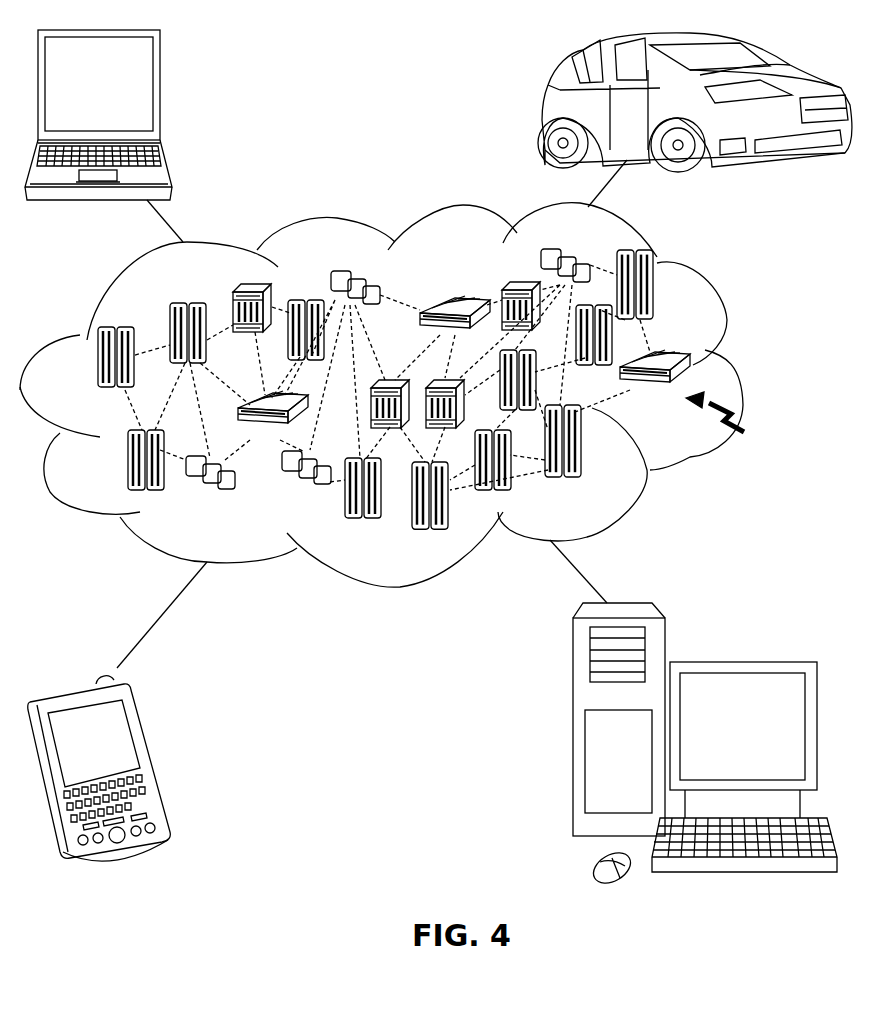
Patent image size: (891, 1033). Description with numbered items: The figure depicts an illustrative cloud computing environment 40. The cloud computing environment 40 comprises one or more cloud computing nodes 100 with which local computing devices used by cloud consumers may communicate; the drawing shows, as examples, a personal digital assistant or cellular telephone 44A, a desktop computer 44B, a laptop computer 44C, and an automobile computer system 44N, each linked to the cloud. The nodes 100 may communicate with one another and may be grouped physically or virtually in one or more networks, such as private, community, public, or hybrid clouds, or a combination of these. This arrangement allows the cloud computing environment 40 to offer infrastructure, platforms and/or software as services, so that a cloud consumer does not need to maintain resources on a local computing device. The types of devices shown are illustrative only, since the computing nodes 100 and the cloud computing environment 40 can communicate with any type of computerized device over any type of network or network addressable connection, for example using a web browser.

The cloud computing environment 40 is at (742, 366).
The personal digital assistant or cellular telephone 44A is at (152, 757).
The desktop computer 44B is at (740, 660).
The laptop computer 44C is at (160, 93).
The automobile computer system 44N is at (547, 108).
The cloud computing nodes 100 is at (747, 419).